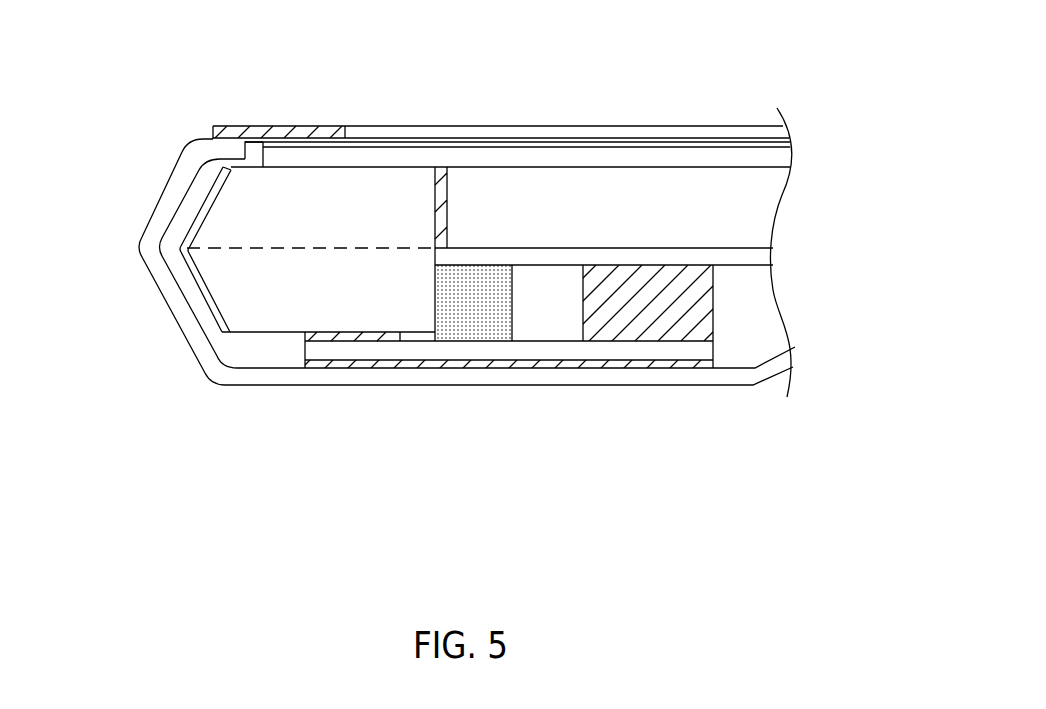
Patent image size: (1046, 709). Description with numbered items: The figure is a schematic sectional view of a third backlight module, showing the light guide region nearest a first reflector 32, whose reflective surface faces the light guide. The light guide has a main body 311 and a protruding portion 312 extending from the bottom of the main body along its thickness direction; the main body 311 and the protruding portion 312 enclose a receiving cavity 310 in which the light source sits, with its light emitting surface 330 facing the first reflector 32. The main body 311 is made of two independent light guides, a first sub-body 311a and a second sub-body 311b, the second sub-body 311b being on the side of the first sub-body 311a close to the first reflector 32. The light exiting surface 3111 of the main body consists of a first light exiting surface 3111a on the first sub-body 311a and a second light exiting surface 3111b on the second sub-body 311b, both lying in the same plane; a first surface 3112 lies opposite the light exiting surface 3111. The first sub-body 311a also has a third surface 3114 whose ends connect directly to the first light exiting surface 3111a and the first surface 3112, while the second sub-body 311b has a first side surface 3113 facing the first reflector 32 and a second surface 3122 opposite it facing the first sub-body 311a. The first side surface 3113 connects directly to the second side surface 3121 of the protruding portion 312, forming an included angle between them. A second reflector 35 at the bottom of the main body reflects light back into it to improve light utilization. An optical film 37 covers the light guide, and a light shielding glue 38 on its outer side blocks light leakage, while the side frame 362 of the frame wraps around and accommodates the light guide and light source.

The light shielding glue 38 is at (237, 137).
The optical film 37 is at (588, 155).
The light exiting surface 3111 is at (477, 517).
The first light exiting surface 3111a is at (675, 167).
The second light exiting surface 3111b is at (388, 167).
The first surface 3112 is at (515, 245).
The first side surface 3113 is at (222, 196).
The third surface 3114 is at (453, 195).
The main body 311 is at (285, 517).
The first sub-body 311a is at (745, 203).
The second sub-body 311b is at (328, 197).
The protruding portion 312 is at (337, 290).
The second side surface 3121 is at (225, 317).
The second surface 3122 is at (423, 218).
The light emitting surface 330 is at (437, 312).
The receiving cavity 310 is at (543, 322).
The second reflector 35 is at (670, 255).
The first reflector 32 is at (207, 305).
The side frame 362 is at (167, 212).